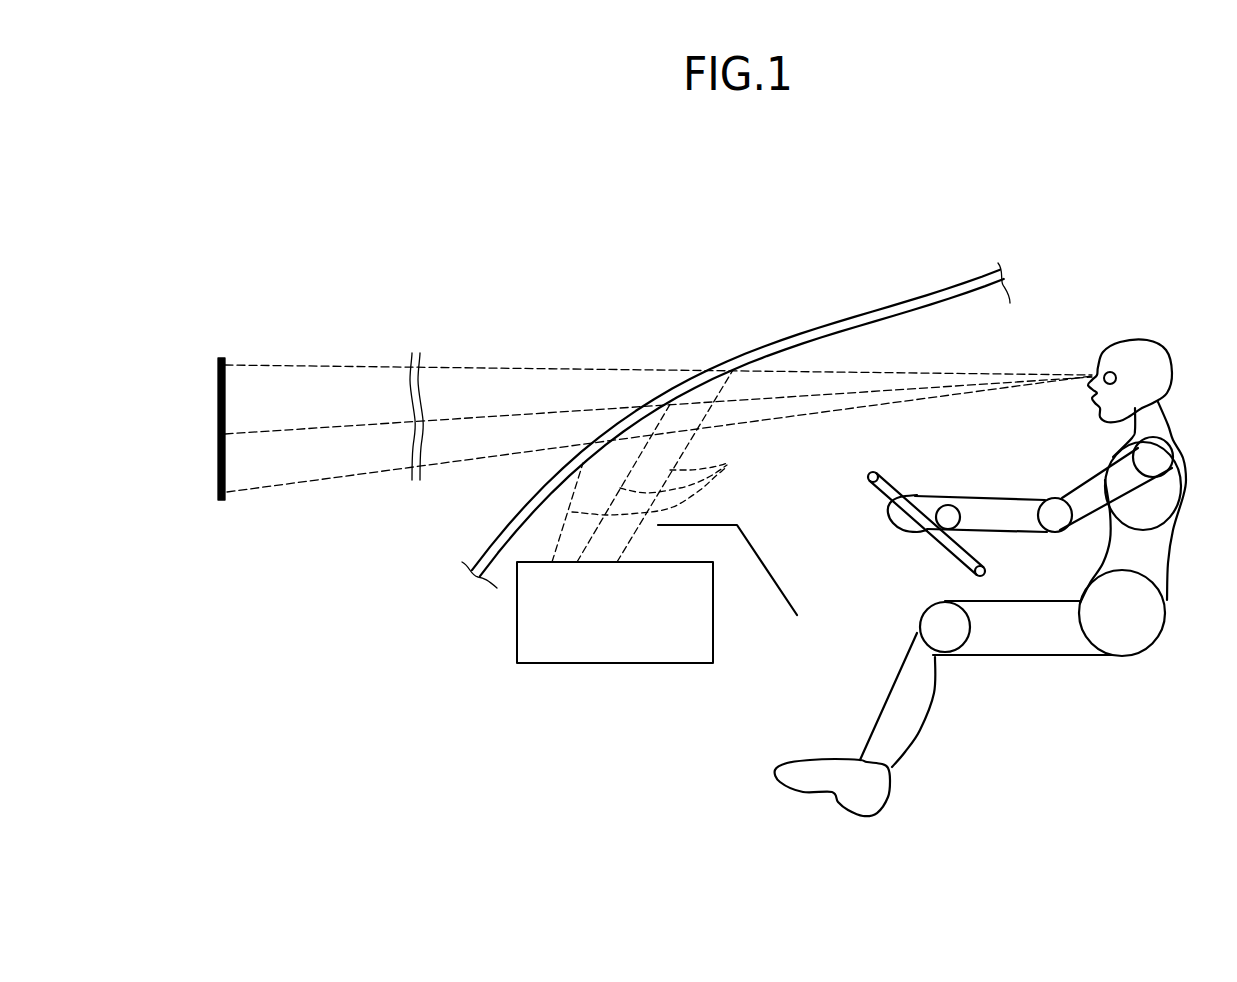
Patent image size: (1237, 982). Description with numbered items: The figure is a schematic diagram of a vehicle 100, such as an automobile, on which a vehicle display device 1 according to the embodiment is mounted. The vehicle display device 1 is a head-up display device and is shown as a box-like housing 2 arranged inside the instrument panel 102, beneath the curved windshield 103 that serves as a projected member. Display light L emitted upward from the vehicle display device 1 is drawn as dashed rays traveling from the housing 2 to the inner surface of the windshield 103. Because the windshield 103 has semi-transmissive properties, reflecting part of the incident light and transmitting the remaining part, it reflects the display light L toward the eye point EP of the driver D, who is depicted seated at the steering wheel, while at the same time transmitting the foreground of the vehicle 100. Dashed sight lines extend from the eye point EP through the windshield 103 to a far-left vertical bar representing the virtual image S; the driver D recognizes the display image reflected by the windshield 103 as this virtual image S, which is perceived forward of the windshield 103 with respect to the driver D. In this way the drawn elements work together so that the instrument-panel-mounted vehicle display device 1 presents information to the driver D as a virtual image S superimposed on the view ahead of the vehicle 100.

The vehicle 100 is at (479, 204).
The windshield 103 is at (878, 322).
The instrument panel 102 is at (787, 593).
The vehicle display device 1 is at (569, 690).
The housing 2 is at (517, 625).
The display light L is at (733, 466).
The virtual image S is at (225, 392).
The eye point EP is at (1095, 373).
The driver D is at (1150, 340).